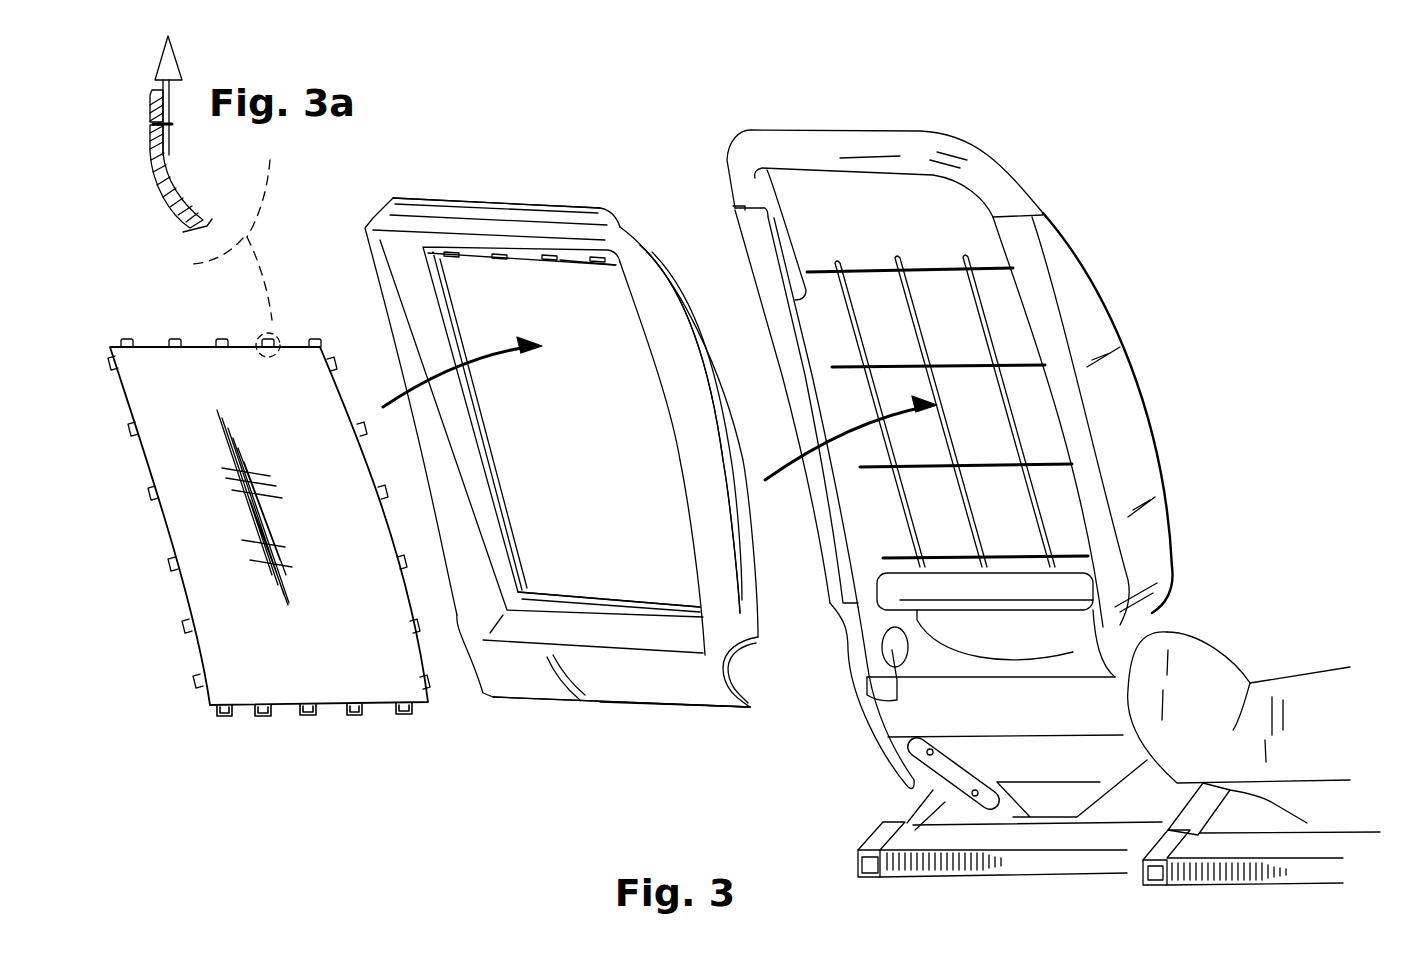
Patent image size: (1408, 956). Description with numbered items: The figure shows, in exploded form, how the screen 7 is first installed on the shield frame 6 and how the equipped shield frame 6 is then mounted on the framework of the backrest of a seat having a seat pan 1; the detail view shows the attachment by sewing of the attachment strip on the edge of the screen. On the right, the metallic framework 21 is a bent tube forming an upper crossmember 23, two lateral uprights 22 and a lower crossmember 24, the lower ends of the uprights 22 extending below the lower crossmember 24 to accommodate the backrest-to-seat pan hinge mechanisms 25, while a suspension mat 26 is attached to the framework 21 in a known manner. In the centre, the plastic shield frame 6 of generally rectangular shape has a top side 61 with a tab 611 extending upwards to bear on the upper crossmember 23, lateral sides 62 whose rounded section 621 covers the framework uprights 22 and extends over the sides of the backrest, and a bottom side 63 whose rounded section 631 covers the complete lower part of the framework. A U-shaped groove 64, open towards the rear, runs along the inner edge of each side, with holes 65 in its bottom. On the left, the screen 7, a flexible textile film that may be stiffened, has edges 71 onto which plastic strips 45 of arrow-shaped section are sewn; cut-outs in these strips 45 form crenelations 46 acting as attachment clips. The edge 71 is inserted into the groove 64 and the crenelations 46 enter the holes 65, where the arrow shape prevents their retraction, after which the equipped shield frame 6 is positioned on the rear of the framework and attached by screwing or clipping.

In FIG. 3, the seat pan 1 is at (1233, 728).
In FIG. 3, the shield frame 6 is at (528, 628).
In FIG. 3, the screen 7 is at (318, 688).
In FIG. 3, the metallic framework 21 is at (985, 177).
In FIG. 3, the lateral uprights 22 is at (762, 257).
In FIG. 3, the upper crossmember 23 is at (855, 136).
In FIG. 3, the lower crossmember 24 is at (953, 588).
In FIG. 3, the backrest-to-seat pan hinge mechanisms 25 is at (853, 702).
In FIG. 3, the suspension mat 26 is at (1047, 502).
In FIG. 3A, the plastic strips 45 is at (170, 108).
In FIG. 3A, the crenelations 46 is at (160, 67).
In FIG. 3, the crenelations 46 is at (173, 339).
In FIG. 3, the top side 61 is at (523, 246).
In FIG. 3, the tab 611 is at (452, 207).
In FIG. 3, the lateral sides 62 is at (697, 438).
In FIG. 3, the rounded section 621 is at (747, 581).
In FIG. 3, the bottom side 63 is at (606, 678).
In FIG. 3, the rounded section 631 is at (665, 679).
In FIG. 3, the U-shaped groove 64 is at (574, 265).
In FIG. 3, the holes 65 is at (548, 262).
In FIG. 3A, the edges 71 is at (153, 140).
In FIG. 3, the edges 71 is at (278, 705).